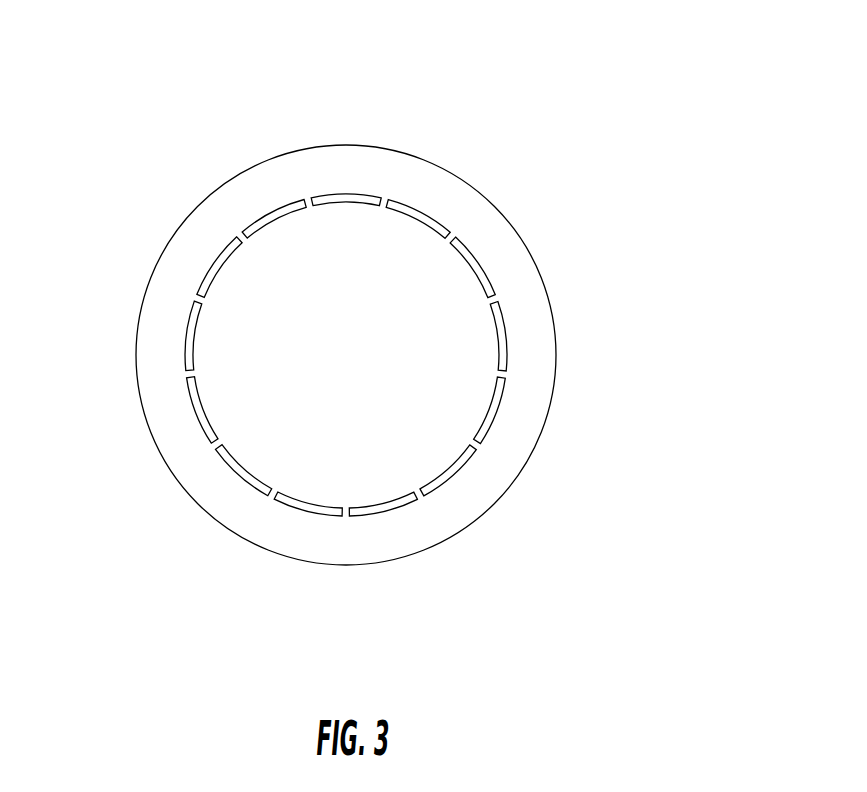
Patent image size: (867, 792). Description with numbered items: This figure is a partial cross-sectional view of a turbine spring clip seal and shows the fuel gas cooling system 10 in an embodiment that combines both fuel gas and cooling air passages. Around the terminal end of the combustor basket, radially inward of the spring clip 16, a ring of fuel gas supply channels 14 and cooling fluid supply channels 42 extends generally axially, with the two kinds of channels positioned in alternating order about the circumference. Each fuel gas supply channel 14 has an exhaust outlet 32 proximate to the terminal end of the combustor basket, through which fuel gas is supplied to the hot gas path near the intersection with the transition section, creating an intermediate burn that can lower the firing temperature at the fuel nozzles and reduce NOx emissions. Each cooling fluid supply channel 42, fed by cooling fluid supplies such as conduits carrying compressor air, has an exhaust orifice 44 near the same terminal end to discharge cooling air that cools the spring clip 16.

The fuel gas cooling system 10 is at (559, 93).
The fuel gas supply channel 14 is at (318, 195).
The spring clip 16 is at (197, 267).
The exhaust outlet 32 is at (342, 197).
The cooling fluid supply channel 42 is at (383, 208).
The exhaust orifice 44 is at (275, 208).